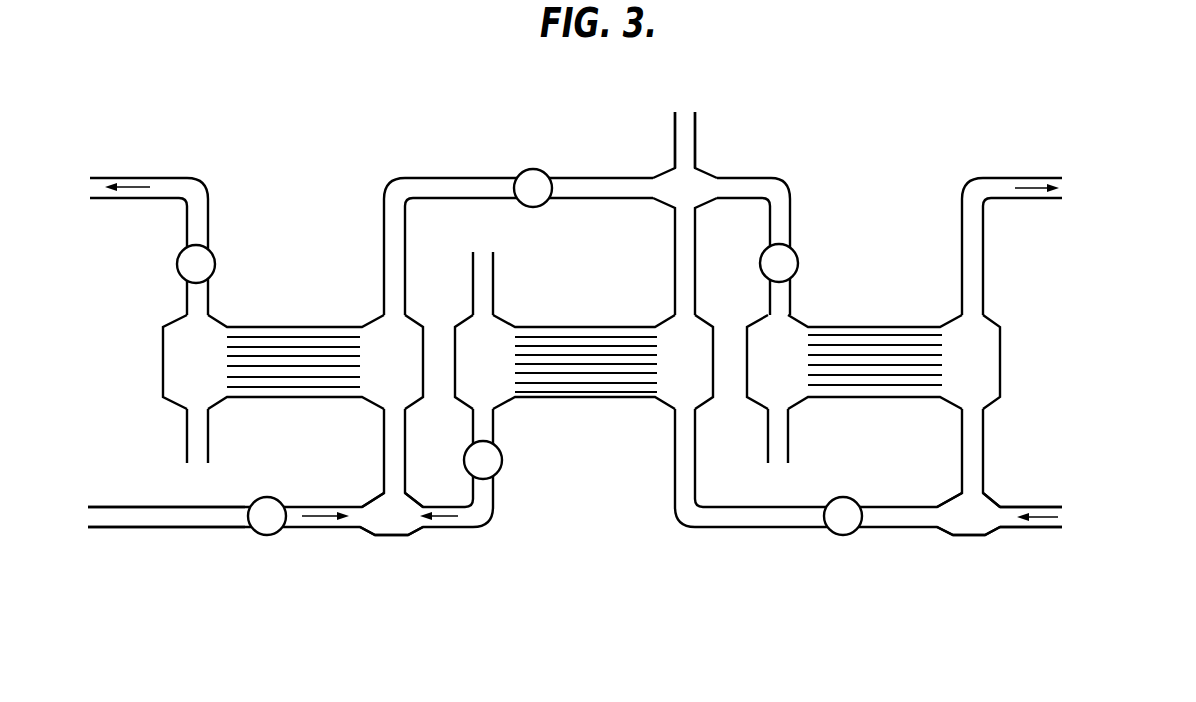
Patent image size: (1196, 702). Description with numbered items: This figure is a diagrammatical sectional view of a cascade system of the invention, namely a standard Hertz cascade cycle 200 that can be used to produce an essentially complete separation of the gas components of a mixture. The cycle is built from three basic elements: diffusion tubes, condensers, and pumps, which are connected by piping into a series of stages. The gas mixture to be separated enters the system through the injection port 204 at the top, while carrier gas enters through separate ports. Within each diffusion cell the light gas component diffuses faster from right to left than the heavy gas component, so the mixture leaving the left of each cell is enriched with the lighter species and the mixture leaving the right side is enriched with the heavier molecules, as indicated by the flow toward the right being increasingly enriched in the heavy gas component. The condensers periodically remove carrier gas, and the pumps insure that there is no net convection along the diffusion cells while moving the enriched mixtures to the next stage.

The Hertz cascade cycle 200 is at (390, 137).
The injection port 204 is at (677, 134).